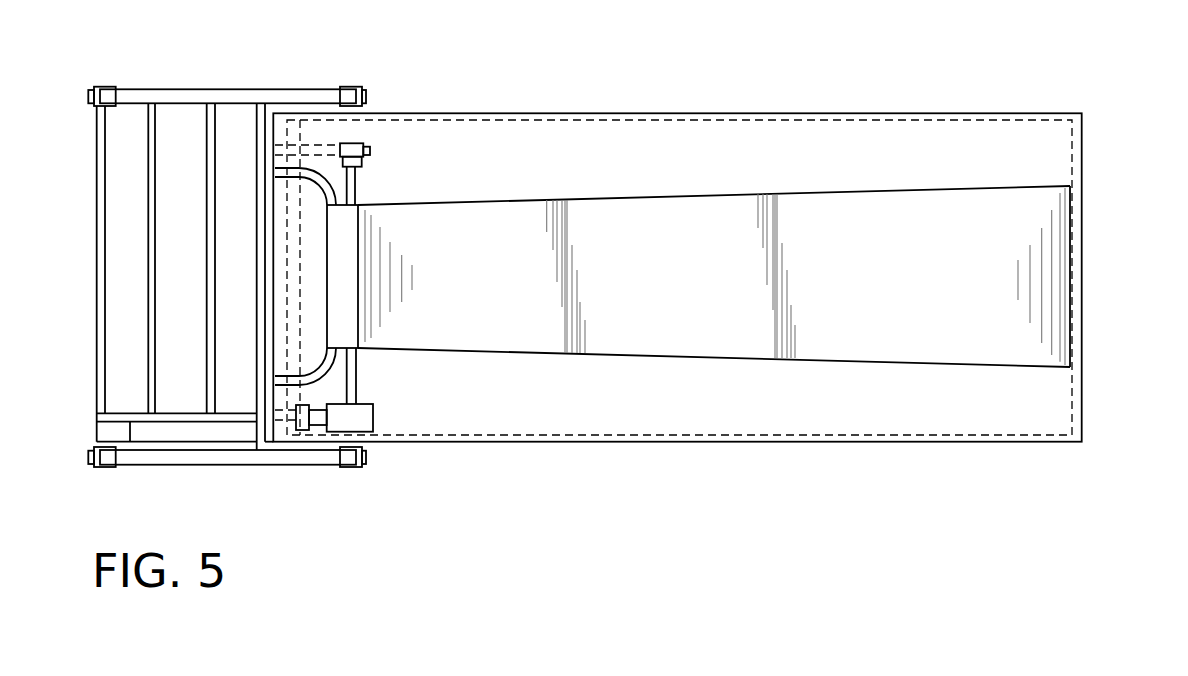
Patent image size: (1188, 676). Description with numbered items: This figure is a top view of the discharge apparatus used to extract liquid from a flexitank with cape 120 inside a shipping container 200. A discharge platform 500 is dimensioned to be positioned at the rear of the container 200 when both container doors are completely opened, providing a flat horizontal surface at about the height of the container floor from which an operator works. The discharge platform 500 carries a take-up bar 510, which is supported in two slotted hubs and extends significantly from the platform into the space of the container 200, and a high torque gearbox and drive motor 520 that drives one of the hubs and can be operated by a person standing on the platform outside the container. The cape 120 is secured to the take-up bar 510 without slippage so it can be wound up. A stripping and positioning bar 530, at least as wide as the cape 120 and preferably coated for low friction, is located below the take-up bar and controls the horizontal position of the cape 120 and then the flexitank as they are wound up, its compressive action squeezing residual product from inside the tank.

The discharge platform 500 is at (766, 30).
The container 200 is at (1078, 143).
The cape 120 is at (1053, 264).
The take-up bar 510 is at (367, 423).
The high torque gearbox and drive motor 520 is at (350, 188).
The stripping and positioning bar 530 is at (332, 371).